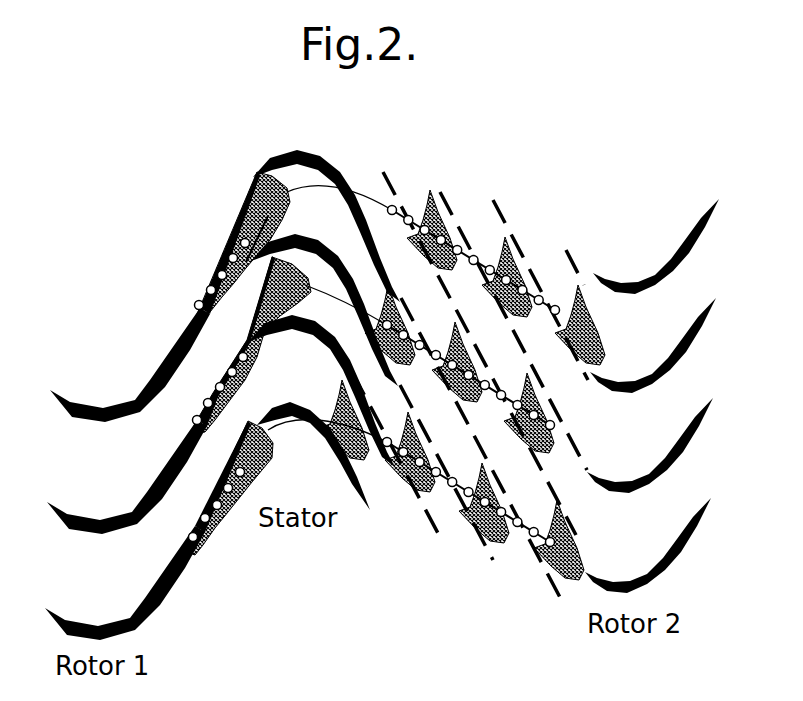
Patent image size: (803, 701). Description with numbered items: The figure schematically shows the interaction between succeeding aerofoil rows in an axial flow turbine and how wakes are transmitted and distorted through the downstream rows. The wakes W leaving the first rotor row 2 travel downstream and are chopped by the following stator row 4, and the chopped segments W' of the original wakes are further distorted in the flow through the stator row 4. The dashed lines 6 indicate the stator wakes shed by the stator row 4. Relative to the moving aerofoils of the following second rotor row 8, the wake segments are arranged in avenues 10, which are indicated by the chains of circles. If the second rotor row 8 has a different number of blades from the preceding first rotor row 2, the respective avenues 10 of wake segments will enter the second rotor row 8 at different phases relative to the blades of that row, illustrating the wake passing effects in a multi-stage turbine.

The first rotor row 2 is at (90, 362).
The stator row 4 is at (322, 146).
The dashed lines 6 is at (528, 262).
The second rotor row 8 is at (661, 234).
The avenues 10 is at (528, 538).
The wakes W is at (244, 363).
The chopped segments W' is at (436, 349).